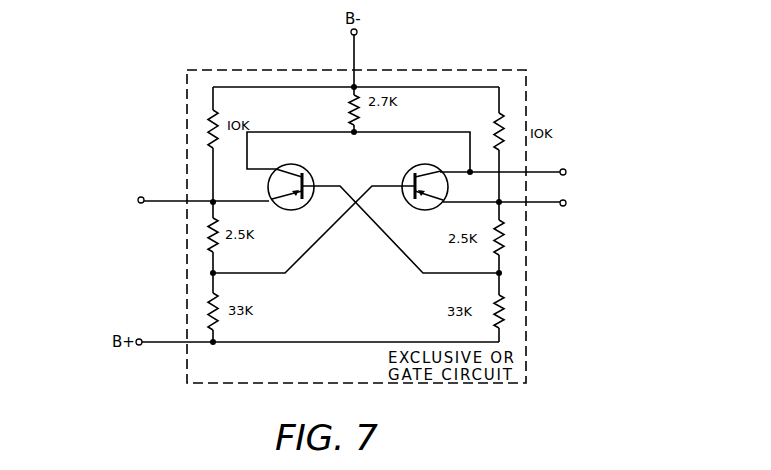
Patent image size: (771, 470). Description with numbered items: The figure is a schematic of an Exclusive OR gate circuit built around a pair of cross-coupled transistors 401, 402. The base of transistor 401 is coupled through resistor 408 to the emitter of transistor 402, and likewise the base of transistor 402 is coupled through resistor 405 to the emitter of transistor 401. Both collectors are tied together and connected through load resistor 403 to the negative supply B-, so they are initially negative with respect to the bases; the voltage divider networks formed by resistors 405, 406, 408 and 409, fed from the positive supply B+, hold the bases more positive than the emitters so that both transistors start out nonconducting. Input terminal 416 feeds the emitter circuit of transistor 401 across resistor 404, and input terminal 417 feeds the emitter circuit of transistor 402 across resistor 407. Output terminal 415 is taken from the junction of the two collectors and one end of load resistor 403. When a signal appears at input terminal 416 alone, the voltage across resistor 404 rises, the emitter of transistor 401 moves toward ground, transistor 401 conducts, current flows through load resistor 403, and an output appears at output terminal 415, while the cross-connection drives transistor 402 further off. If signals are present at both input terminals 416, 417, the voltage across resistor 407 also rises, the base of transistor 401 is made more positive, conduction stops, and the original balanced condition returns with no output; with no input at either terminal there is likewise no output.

The transistor 401 is at (312, 169).
The transistor 402 is at (412, 169).
The load resistor 403 is at (349, 111).
The resistor 404 is at (208, 125).
The resistor 405 is at (208, 236).
The resistor 406 is at (208, 302).
The resistor 407 is at (496, 128).
The resistor 408 is at (504, 236).
The resistor 409 is at (504, 305).
The output terminal 415 is at (566, 169).
The input terminal 416 is at (143, 197).
The input terminal 417 is at (563, 206).